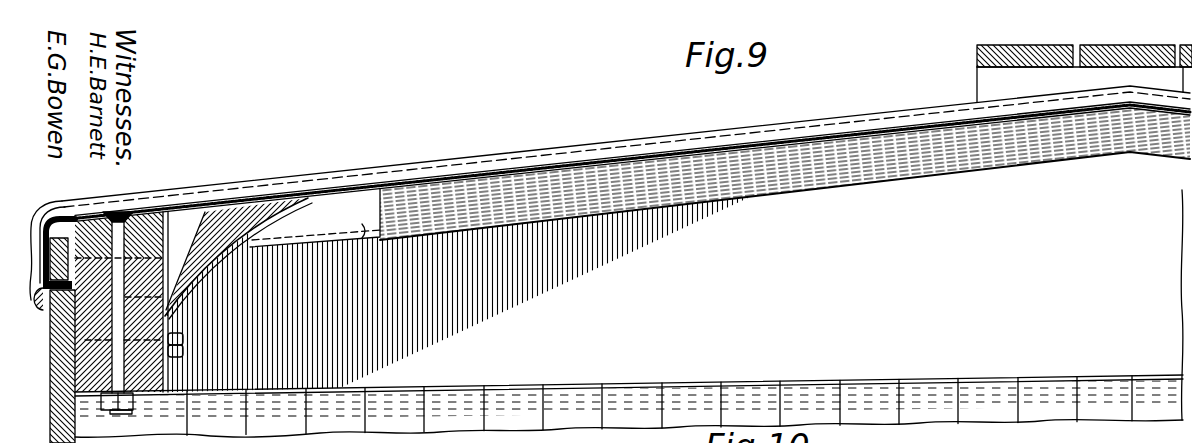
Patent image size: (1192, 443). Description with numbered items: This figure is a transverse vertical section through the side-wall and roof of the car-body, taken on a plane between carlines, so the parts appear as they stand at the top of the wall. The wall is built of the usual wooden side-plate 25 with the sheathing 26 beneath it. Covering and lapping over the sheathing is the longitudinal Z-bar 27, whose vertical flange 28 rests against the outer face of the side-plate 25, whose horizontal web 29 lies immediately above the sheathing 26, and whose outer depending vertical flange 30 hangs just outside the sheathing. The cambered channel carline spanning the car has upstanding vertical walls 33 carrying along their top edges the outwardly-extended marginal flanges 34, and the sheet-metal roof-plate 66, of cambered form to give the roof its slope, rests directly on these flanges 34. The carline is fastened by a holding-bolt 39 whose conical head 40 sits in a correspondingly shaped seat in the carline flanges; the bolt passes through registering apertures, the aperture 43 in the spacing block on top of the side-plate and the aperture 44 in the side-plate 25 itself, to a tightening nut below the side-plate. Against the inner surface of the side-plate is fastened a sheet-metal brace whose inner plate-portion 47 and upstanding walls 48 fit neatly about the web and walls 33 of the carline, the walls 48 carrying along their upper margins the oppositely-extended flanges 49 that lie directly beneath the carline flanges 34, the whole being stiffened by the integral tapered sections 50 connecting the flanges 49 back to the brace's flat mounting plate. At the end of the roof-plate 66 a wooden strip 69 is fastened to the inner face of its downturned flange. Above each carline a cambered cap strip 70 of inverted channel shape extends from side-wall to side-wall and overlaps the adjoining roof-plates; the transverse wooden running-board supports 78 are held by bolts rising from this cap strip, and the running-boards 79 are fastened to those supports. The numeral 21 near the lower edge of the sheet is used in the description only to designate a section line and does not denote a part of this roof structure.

The keel plate 21 is at (160, 435).
The side-plate 25 is at (83, 377).
The sheathing 26 is at (603, 316).
The Z-bar 27 is at (50, 205).
The vertical flange 28 is at (119, 253).
The horizontal web 29 is at (93, 325).
The outer depending vertical flange 30 is at (52, 330).
The upstanding vertical walls 33 is at (872, 180).
The marginal flanges 34 is at (957, 128).
The holding-bolts 39 is at (125, 312).
The conical heads 40 is at (127, 209).
The aperture in block 43 is at (166, 212).
The aperture in side-plate 44 is at (108, 388).
The inner plate-portion 47 is at (314, 246).
The upstanding-walls 48 is at (380, 240).
The flanges 49 is at (315, 218).
The tapered sections 50 is at (205, 272).
The roof-plate 66 is at (703, 153).
The wooden strip 69 is at (57, 231).
The cap strip 70 is at (865, 116).
The running-board supports 78 is at (988, 84).
The running-boards 79 is at (1032, 46).